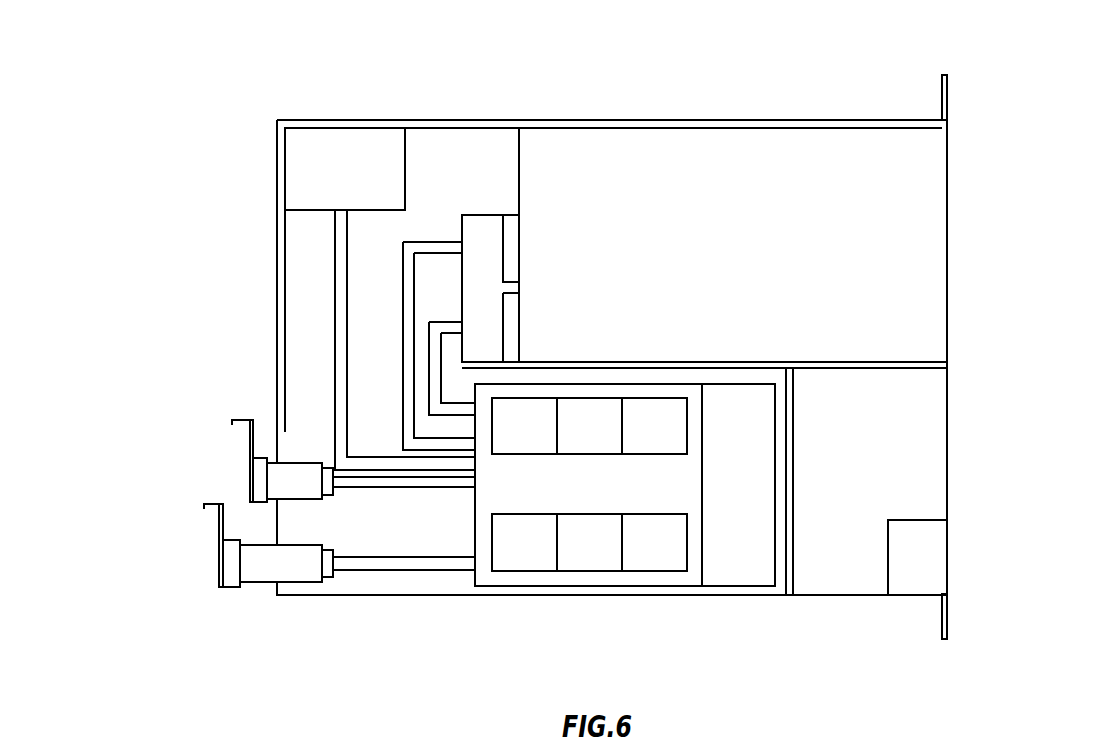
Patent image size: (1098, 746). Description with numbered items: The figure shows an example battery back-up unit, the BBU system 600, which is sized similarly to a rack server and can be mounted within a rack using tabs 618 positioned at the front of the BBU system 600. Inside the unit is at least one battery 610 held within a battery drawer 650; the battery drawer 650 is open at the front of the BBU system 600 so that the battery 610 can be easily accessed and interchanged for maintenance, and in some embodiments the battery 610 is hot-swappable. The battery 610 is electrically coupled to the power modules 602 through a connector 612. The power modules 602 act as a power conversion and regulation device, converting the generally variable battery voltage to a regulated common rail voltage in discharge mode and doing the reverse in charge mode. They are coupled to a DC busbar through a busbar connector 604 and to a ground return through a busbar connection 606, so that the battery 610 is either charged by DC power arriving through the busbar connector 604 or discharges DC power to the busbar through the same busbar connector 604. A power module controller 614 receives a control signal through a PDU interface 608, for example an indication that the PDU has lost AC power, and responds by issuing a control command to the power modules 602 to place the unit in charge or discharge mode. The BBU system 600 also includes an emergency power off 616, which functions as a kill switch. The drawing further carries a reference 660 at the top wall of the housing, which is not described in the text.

The BBU system 600 is at (375, 600).
The power modules 602 is at (648, 590).
The busbar connector 604 is at (219, 576).
The busbar connection 606 is at (250, 478).
The PDU interface 608 is at (295, 178).
The battery 610 is at (790, 146).
The connector 612 is at (492, 213).
The power module controller 614 is at (757, 590).
The emergency power off 616 is at (925, 578).
The tabs 618 is at (950, 113).
The battery drawer 650 is at (949, 260).
The top wall 660 is at (586, 120).